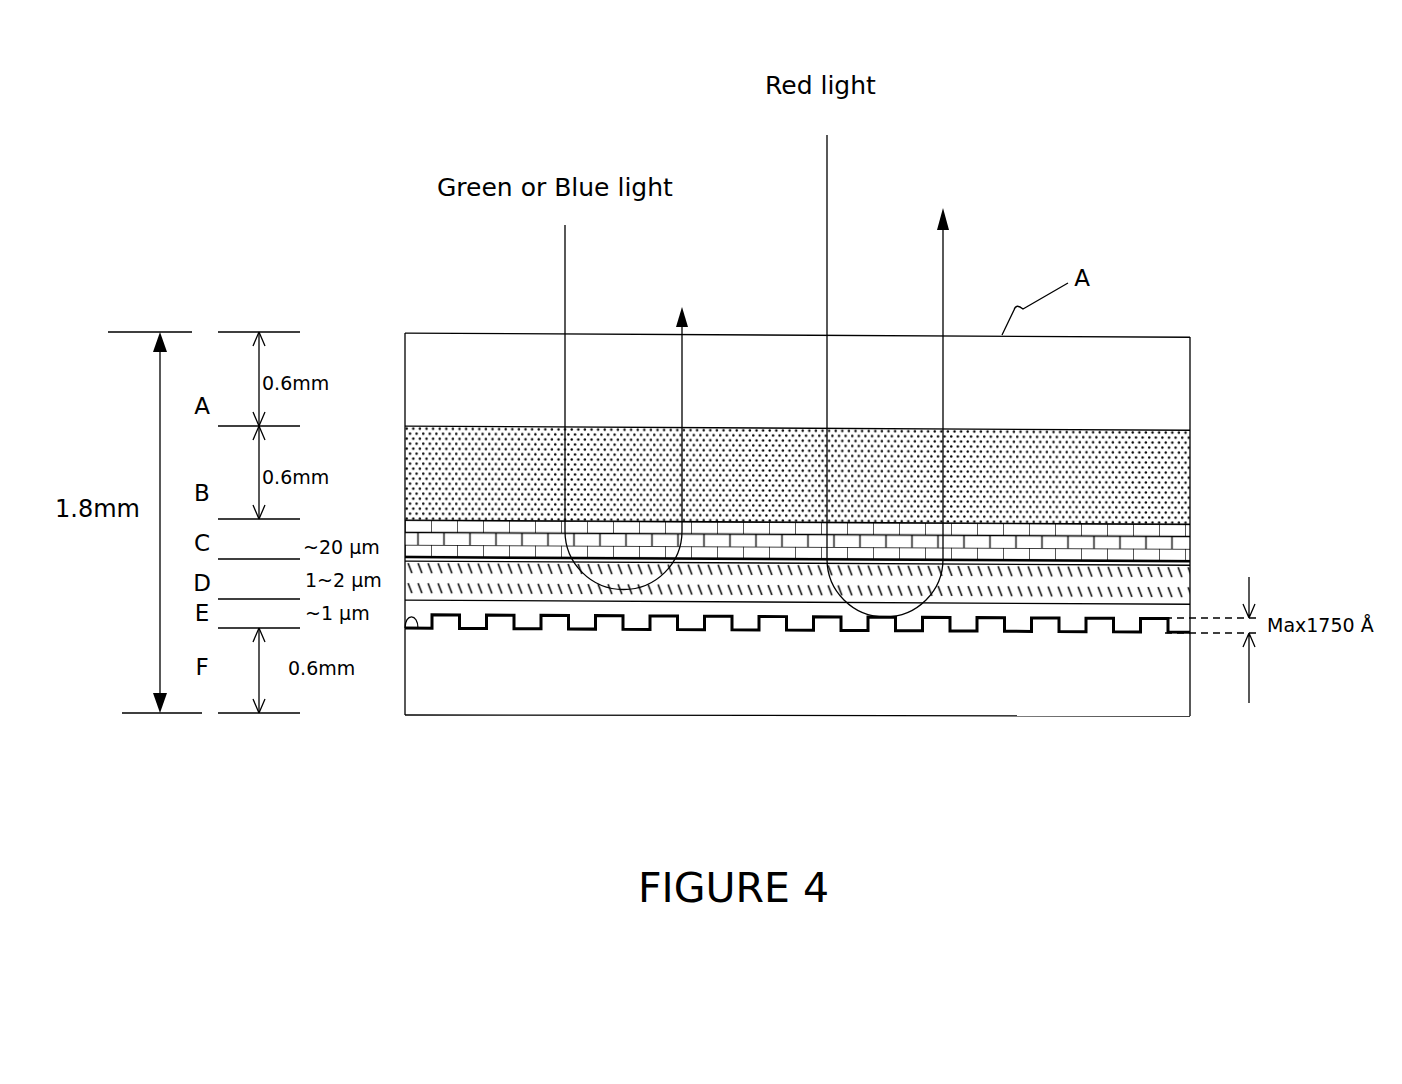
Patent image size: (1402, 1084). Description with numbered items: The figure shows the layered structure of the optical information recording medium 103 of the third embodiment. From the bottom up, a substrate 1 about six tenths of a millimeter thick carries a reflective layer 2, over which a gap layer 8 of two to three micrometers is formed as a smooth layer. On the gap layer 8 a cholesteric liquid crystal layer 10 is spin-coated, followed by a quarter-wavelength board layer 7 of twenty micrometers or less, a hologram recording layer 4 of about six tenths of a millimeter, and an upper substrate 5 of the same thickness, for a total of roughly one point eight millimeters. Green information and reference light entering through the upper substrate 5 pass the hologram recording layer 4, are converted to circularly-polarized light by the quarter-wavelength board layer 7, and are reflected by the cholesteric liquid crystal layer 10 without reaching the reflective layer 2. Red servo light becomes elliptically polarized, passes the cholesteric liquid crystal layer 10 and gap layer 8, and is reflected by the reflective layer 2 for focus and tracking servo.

The substrate 1 is at (1143, 673).
The reflective layer 2 is at (404, 616).
The hologram recording layer 4 is at (1180, 477).
The substrate 5 is at (1152, 385).
The quarter-wavelength board layer 7 is at (1177, 535).
The gap layer 8 is at (1178, 617).
The cholesteric liquid crystal layer 10 is at (1178, 577).
The optical information recording medium 103 is at (1250, 330).